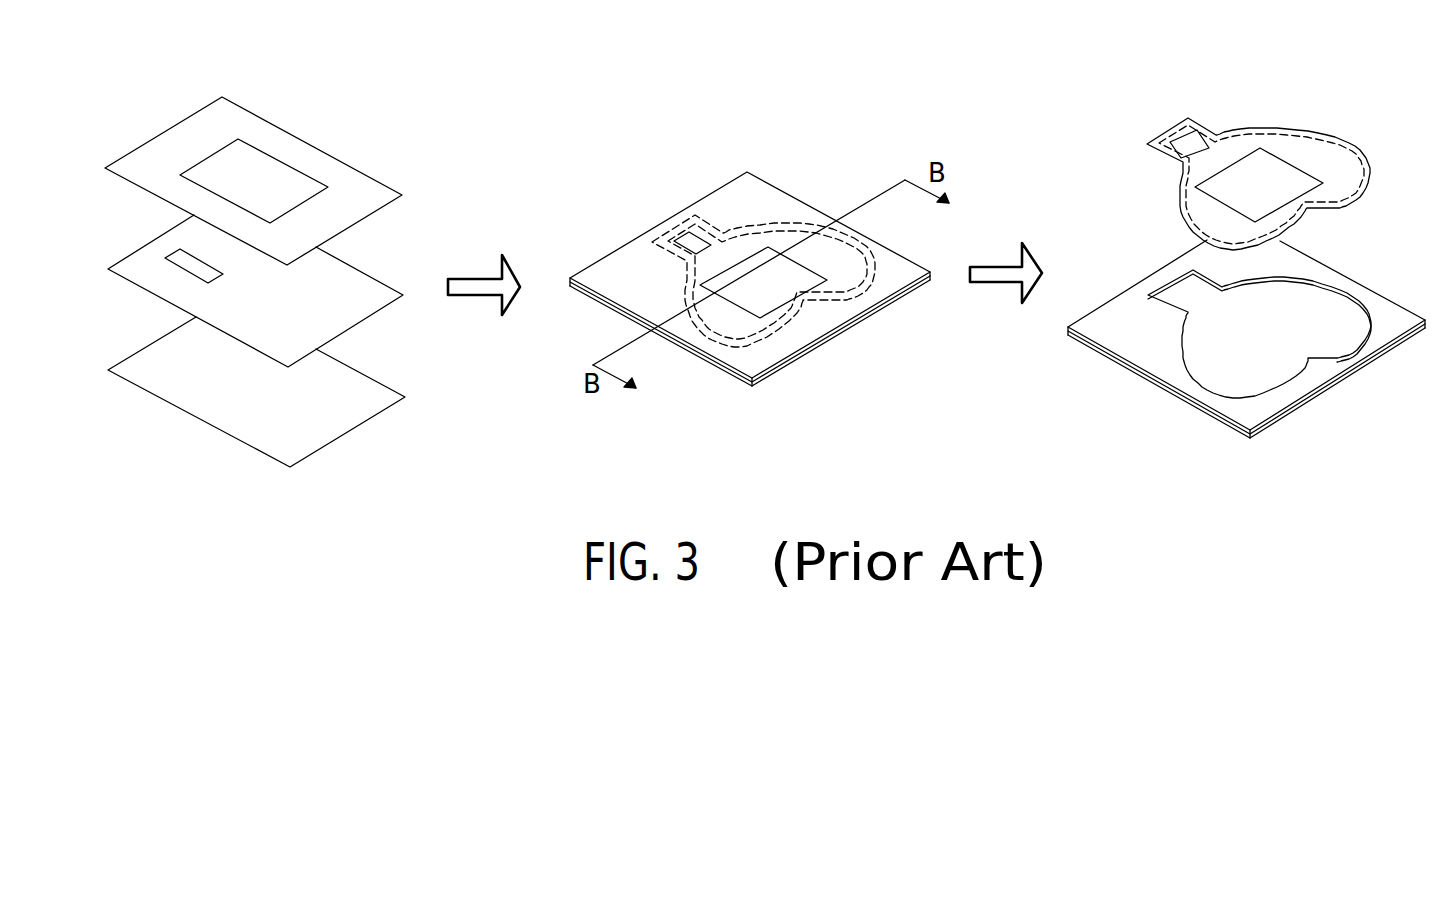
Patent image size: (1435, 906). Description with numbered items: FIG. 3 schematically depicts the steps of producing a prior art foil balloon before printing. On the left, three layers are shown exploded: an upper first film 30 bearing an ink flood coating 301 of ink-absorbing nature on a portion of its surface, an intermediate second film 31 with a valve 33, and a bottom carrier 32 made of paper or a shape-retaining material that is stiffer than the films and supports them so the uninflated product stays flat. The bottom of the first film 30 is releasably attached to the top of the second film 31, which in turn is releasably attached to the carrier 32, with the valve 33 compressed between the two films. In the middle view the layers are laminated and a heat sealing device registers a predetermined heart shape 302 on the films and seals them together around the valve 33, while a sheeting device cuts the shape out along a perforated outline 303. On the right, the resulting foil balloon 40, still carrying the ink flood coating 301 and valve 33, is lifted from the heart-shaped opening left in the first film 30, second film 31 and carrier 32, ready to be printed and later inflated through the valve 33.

The first film 30 is at (387, 192).
The ink flood coating 301 is at (270, 177).
The predetermined shape 302 is at (745, 222).
The perforated outline 303 is at (795, 226).
The second film 31 is at (360, 316).
The carrier 32 is at (332, 434).
The valve 33 is at (175, 257).
The foil balloon 40 is at (1360, 132).